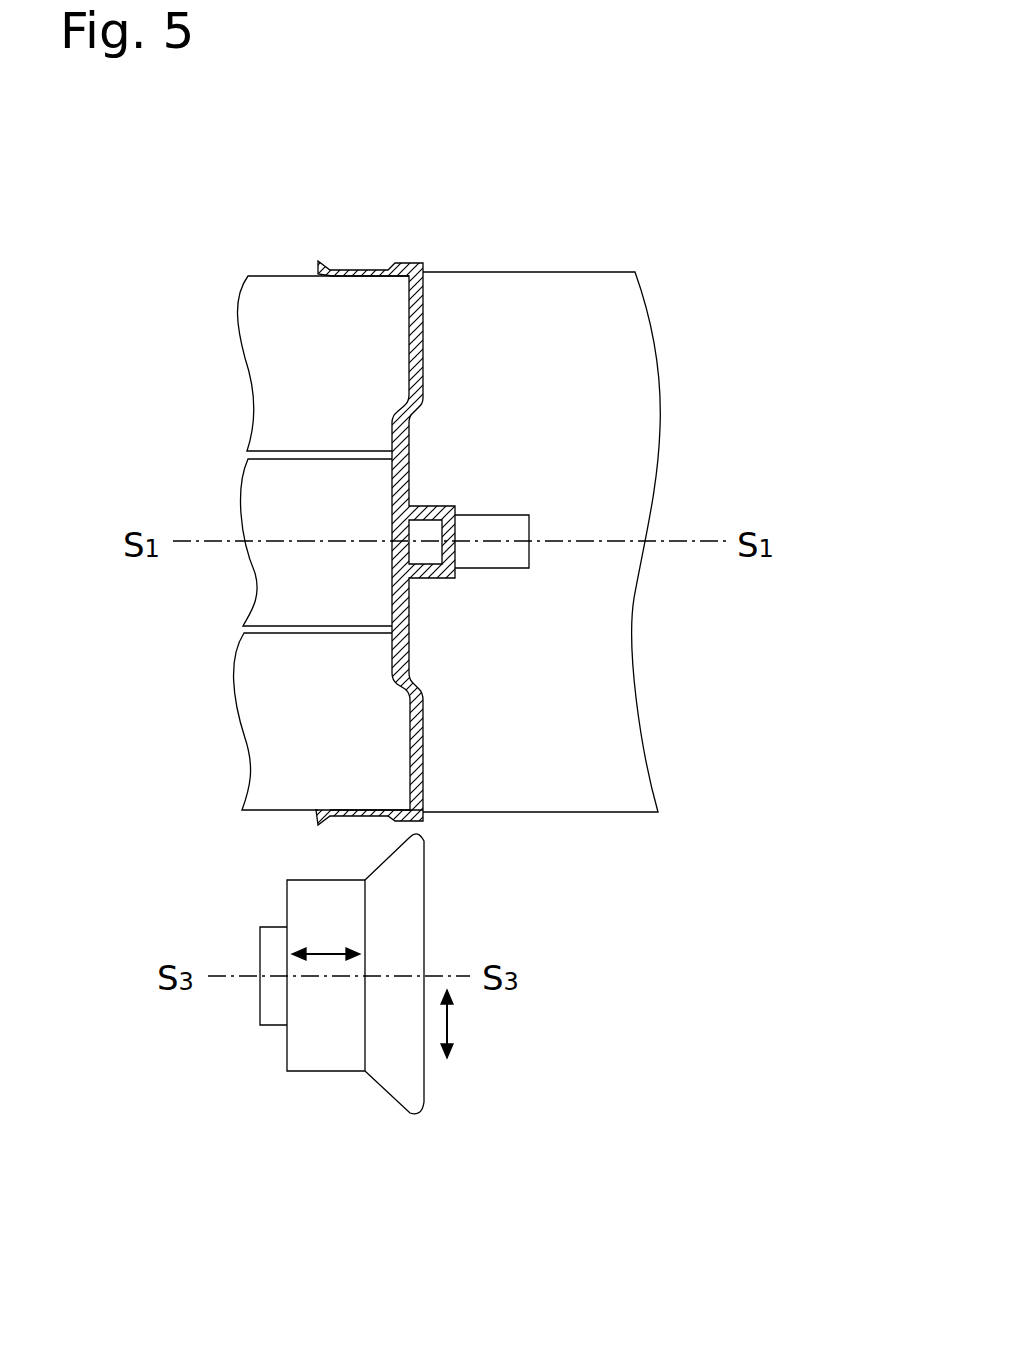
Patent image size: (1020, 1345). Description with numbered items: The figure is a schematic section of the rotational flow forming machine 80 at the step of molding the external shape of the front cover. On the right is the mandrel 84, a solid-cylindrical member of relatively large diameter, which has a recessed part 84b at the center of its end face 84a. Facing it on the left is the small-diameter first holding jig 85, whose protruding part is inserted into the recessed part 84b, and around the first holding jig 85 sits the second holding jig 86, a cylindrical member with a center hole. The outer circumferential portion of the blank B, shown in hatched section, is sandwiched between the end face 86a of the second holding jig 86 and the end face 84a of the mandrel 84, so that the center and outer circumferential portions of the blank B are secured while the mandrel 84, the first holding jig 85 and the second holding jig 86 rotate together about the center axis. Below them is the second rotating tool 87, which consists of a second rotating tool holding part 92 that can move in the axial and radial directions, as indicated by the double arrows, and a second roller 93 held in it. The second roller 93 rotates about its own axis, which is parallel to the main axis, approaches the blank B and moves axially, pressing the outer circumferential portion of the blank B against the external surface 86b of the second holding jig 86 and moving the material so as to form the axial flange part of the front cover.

The rotational flow forming machine 80 is at (589, 435).
The mandrel 84 is at (617, 433).
The end face 84a is at (412, 743).
The recessed part 84b is at (455, 535).
The first holding jig 85 is at (283, 592).
The second holding jig 86 is at (277, 499).
The end face 86a is at (410, 337).
The external surface 86b is at (278, 305).
The blank B is at (471, 495).
The second rotating tool 87 is at (308, 1010).
The second rotating tool holding part 92 is at (272, 1008).
The second roller 93 is at (397, 1080).